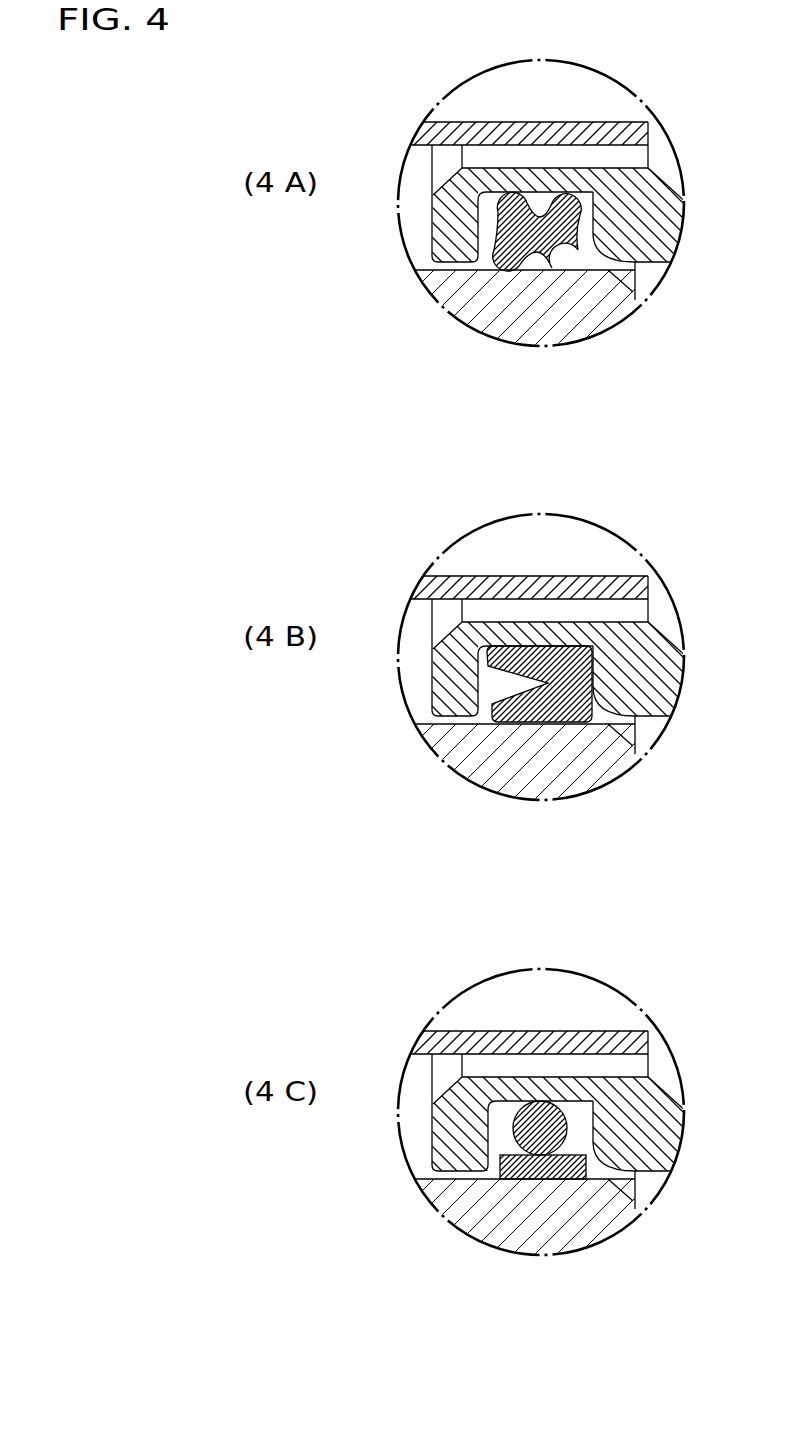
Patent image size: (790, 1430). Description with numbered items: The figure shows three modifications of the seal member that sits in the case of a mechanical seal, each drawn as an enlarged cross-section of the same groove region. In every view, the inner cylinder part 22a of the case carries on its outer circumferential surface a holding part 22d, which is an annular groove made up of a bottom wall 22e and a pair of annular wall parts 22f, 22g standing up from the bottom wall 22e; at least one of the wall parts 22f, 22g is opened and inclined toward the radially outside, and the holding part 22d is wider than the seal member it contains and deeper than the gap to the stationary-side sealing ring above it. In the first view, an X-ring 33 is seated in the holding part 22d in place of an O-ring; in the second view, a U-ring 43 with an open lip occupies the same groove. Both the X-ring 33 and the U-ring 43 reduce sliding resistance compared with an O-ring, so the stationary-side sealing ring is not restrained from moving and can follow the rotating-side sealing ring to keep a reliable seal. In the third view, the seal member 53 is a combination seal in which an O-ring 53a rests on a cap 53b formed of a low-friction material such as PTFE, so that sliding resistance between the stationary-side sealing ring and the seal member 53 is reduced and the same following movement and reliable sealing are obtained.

The inner cylinder part 22a is at (537, 172).
The bottom wall 22e is at (588, 233).
The wall part 22f is at (462, 241).
The holding part 22d is at (582, 229).
The wall part 22g is at (615, 241).
The X-ring 33 is at (540, 268).
The U-ring 43 is at (529, 761).
The seal member 53 is at (494, 1238).
The O-ring 53a is at (524, 1217).
The cap 53b is at (500, 1244).